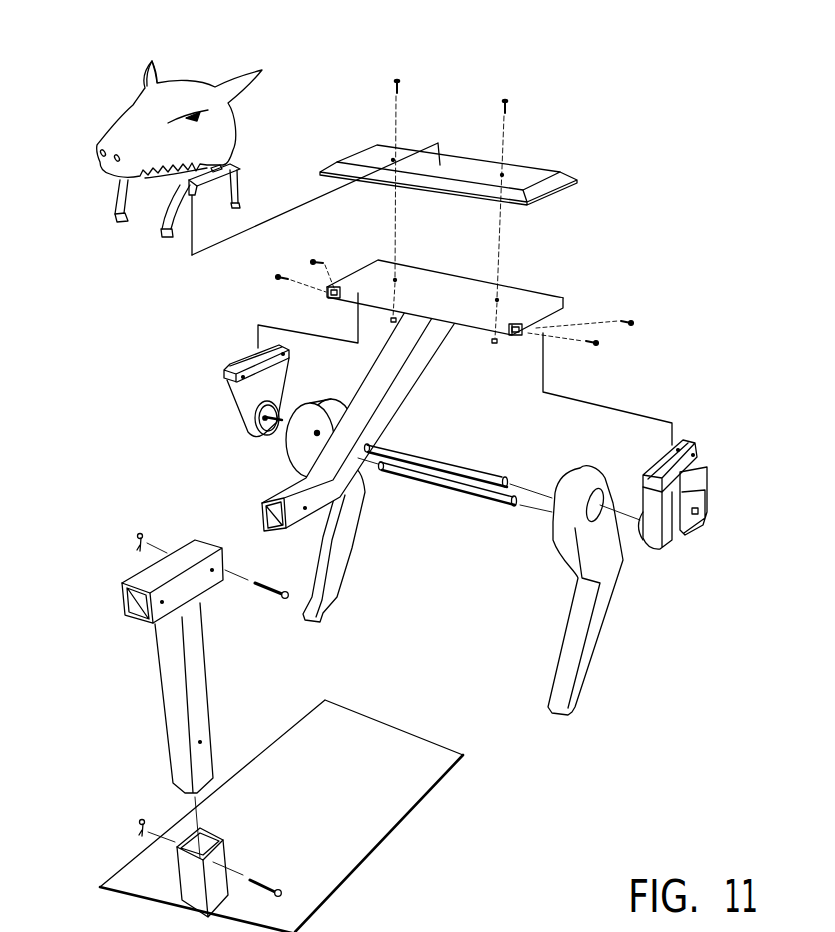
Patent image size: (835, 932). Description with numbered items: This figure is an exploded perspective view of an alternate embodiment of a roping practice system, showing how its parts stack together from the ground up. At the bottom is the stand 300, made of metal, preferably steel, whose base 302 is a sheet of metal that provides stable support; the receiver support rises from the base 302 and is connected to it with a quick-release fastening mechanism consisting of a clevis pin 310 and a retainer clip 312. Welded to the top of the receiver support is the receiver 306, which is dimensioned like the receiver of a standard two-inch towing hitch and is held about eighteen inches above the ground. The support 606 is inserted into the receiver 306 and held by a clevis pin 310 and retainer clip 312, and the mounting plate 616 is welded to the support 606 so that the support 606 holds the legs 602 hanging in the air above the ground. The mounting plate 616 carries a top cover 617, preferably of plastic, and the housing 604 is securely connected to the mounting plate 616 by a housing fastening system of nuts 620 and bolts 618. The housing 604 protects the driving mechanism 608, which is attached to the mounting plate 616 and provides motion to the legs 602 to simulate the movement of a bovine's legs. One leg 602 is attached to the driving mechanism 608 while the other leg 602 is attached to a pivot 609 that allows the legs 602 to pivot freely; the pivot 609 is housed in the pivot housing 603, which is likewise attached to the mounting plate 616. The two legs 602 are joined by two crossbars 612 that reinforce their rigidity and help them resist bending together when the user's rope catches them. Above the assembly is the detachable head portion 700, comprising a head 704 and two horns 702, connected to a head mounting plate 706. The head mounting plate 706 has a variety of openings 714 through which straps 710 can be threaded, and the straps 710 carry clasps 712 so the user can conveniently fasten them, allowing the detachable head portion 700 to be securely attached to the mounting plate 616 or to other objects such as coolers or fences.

The detachable head portion 700 is at (180, 90).
The horns 702 is at (145, 78).
The head 704 is at (217, 135).
The head mounting plate 706 is at (218, 172).
The straps 710 is at (118, 200).
The clasps 712 is at (118, 217).
The openings 714 is at (207, 188).
The bolts 618 is at (396, 79).
The top cover 617 is at (527, 168).
The mounting plate 616 is at (520, 297).
The nuts 620 is at (388, 325).
The pivot housing 603 is at (223, 385).
The pivot 609 is at (258, 438).
The support 606 is at (385, 405).
The crossbars 612 is at (423, 459).
The legs 602 is at (330, 562).
The housing 604 is at (663, 548).
The driving mechanism 608 is at (632, 555).
The retainer clip 312 is at (131, 537).
The receiver 306 is at (147, 578).
The clevis pin 310 is at (262, 600).
The stand 300 is at (177, 707).
The base 302 is at (388, 803).